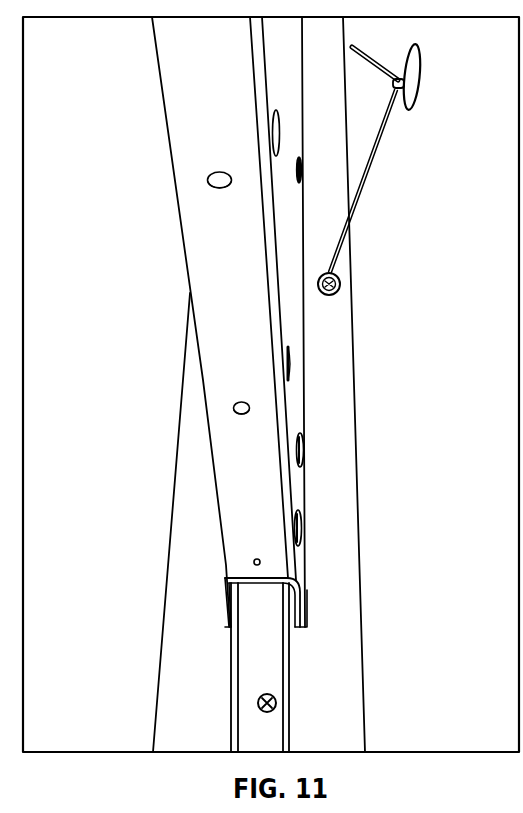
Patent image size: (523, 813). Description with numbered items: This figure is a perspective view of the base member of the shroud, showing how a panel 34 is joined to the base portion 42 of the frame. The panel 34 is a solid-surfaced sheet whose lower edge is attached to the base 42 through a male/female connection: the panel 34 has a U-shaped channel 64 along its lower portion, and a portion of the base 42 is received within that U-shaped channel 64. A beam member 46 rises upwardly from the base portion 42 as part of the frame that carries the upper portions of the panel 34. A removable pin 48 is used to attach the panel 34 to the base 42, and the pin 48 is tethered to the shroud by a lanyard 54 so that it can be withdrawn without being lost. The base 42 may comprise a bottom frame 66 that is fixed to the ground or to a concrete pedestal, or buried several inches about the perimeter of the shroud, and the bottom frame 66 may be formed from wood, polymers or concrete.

The panel 34 is at (300, 80).
The base portion 42 is at (360, 612).
The beam member 46 is at (201, 267).
The removable pin 48 is at (370, 58).
The lanyard 54 is at (363, 182).
The U-shaped channel 64 is at (303, 600).
The bottom frame 66 is at (172, 678).